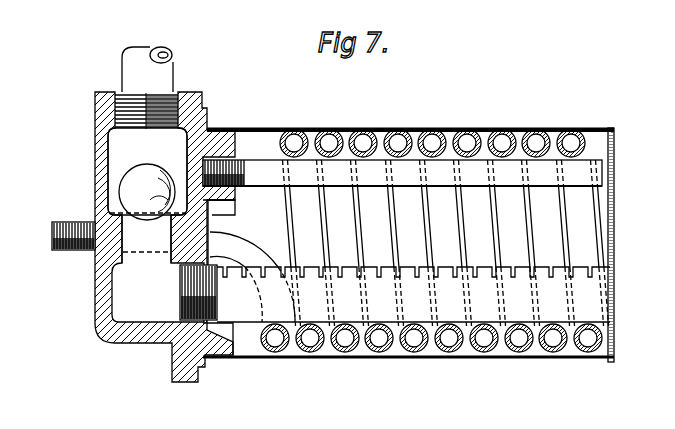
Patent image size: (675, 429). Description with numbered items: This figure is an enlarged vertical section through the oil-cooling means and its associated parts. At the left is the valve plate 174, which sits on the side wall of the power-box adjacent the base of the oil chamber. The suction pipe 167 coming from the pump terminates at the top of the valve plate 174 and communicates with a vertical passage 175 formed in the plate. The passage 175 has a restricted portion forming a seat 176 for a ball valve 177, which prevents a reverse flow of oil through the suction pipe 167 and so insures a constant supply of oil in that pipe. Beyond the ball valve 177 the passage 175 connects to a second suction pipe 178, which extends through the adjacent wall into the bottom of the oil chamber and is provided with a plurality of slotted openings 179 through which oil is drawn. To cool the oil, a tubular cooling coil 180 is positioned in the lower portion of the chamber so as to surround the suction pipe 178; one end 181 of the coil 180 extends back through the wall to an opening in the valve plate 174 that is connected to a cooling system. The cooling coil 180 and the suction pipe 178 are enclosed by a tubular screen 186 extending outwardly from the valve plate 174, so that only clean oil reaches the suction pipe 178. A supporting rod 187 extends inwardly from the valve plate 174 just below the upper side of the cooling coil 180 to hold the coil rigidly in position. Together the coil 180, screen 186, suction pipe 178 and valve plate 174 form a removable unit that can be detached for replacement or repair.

The suction pipe 167 is at (163, 72).
The valve plate 174 is at (100, 143).
The vertical passage 175 is at (128, 157).
The seat 176 is at (98, 222).
The ball valve 177 is at (143, 177).
The suction pipe 178 is at (252, 320).
The slotted openings 179 is at (305, 265).
The tubular cooling coil 180 is at (437, 360).
The end of coil 181 is at (73, 250).
The tubular screen 186 is at (453, 127).
The supporting rod 187 is at (258, 162).